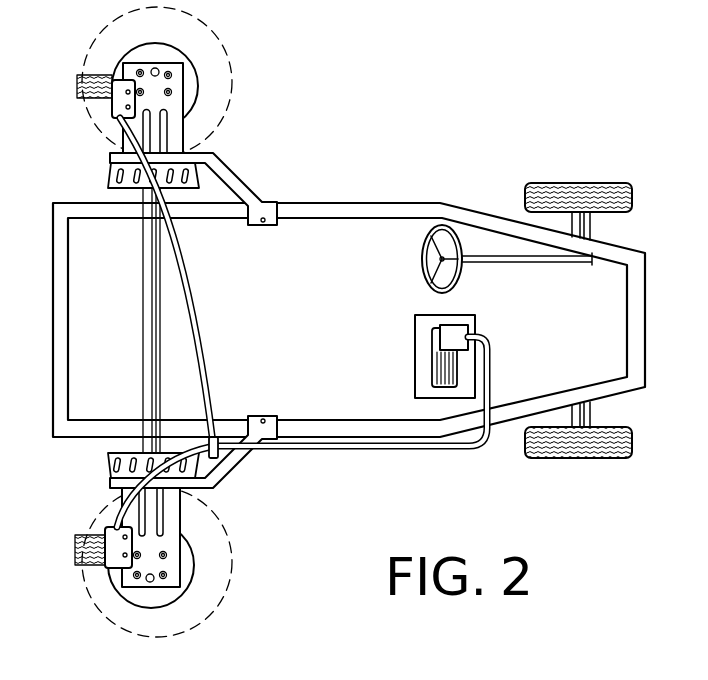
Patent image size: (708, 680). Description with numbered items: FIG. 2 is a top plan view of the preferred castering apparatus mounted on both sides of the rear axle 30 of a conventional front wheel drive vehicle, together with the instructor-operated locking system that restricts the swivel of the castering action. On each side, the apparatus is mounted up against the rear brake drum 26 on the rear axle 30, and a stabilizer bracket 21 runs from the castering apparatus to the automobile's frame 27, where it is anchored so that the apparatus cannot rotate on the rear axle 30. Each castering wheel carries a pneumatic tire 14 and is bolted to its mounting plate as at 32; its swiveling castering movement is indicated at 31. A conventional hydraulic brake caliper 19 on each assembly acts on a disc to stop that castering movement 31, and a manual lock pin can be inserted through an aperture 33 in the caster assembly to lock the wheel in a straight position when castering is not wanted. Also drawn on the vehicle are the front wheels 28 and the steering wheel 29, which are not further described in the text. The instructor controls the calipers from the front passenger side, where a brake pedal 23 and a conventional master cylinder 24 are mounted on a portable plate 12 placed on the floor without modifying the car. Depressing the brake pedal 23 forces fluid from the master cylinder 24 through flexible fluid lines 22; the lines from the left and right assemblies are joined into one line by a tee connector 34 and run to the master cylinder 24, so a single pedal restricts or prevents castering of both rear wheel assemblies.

The portable plate 12 is at (443, 346).
The pneumatic tire 14 is at (77, 88).
The brake caliper 19 is at (112, 115).
The stabilizer bracket 21 is at (250, 185).
The flexible fluid line 22 is at (197, 296).
The brake pedal 23 is at (432, 372).
The master cylinder 24 is at (468, 331).
The rear brake drum 26 is at (108, 463).
The automobile frame 27 is at (358, 204).
The rear wheel 28 is at (563, 183).
The steering wheel 29 is at (458, 284).
The rear axle 30 is at (143, 358).
The castering movement 31 is at (233, 96).
The bolts 32 is at (172, 73).
The aperture 33 is at (158, 68).
The tee connector 34 is at (216, 437).